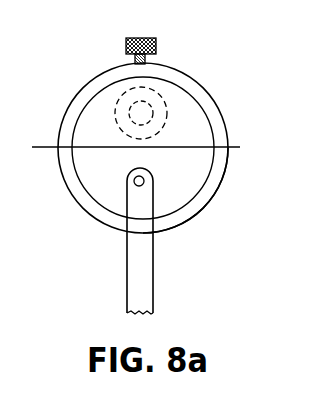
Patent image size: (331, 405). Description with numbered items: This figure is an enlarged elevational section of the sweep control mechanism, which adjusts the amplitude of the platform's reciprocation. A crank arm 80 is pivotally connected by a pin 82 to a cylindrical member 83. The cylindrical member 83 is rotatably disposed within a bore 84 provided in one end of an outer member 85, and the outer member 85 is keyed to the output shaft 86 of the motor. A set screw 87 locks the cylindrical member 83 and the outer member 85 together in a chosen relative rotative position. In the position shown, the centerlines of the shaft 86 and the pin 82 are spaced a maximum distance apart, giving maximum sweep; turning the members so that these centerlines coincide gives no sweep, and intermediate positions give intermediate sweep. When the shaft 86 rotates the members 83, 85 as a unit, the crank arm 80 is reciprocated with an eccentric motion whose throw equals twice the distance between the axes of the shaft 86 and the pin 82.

The crank arm 80 is at (153, 267).
The pin 82 is at (125, 188).
The cylindrical member 83 is at (193, 125).
The bore 84 is at (200, 176).
The outer member 85 is at (186, 76).
The output shaft 86 is at (130, 107).
The set screw 87 is at (143, 37).